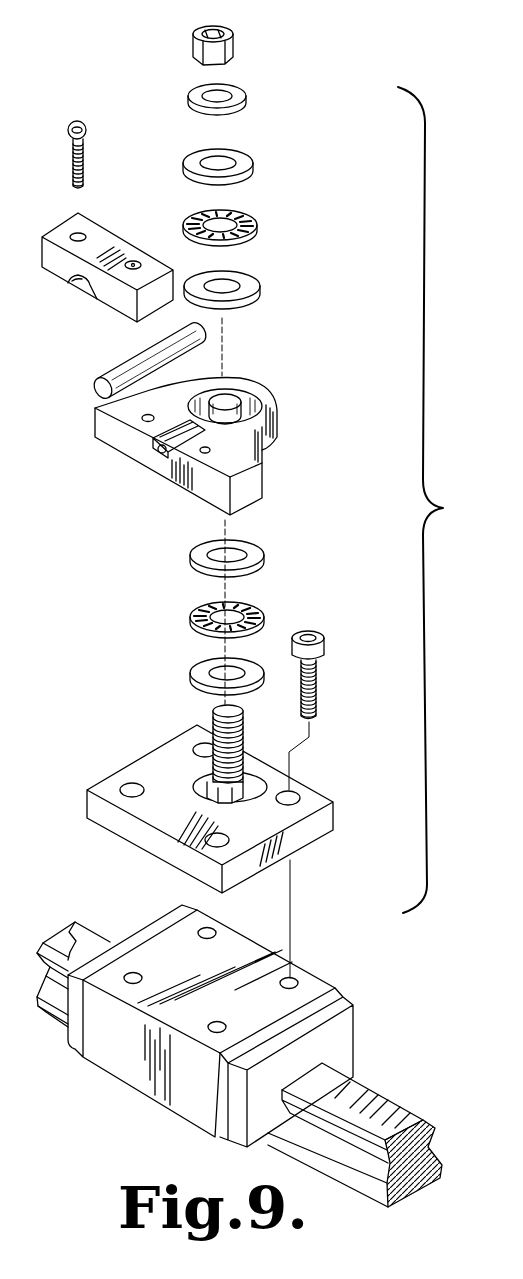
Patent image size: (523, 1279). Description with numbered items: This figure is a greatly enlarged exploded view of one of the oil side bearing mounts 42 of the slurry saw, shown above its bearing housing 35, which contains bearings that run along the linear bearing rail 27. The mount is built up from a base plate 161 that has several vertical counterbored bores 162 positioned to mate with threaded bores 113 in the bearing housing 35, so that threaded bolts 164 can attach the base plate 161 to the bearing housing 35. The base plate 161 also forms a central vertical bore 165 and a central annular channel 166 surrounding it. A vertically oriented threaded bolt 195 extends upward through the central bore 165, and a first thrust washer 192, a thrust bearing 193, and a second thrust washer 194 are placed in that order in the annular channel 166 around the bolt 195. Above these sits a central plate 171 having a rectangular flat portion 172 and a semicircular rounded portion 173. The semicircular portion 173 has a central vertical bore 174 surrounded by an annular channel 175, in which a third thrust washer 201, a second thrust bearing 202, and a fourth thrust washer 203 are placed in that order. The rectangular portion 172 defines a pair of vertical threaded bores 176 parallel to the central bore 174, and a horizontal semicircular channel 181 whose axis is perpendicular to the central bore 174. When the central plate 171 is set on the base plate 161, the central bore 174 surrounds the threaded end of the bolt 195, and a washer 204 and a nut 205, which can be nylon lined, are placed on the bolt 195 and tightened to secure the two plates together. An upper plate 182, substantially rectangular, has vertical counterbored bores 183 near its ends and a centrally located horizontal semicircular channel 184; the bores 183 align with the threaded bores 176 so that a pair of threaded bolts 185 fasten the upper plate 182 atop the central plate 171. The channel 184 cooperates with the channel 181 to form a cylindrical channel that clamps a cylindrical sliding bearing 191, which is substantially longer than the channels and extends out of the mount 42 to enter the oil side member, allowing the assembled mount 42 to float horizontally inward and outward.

The nut 205 is at (238, 45).
The washer 204 is at (248, 90).
The fourth thrust washer 203 is at (252, 162).
The second thrust bearing 202 is at (258, 214).
The third thrust washer 201 is at (260, 278).
The threaded bolts 185 is at (87, 143).
The upper plate 182 is at (91, 250).
The vertical counterbored bores 183 is at (134, 262).
The horizontal semicircular channel 184 is at (78, 282).
The sliding bearing 191 is at (112, 362).
The central plate 171 is at (193, 430).
The rectangular flat portion 172 is at (105, 435).
The semicircular rounded portion 173 is at (279, 412).
The central vertical bore 174 is at (227, 399).
The annular channel 175 is at (250, 399).
The vertical threaded bores 176 is at (192, 480).
The horizontal semicircular channel 181 is at (163, 449).
The second thrust washer 194 is at (248, 548).
The thrust bearing 193 is at (259, 612).
The first thrust washer 192 is at (188, 675).
The threaded bolts 164 is at (320, 682).
The threaded bolt 195 is at (245, 735).
The central annular channel 166 is at (196, 784).
The central vertical bore 165 is at (212, 800).
The vertical counterbored bores 162 is at (298, 792).
The base plate 161 is at (237, 798).
The threaded bores 113 is at (297, 979).
The bearing housing 35 is at (210, 1026).
The linear bearing rail 27 is at (400, 1117).
The oil side bearing mount 42 is at (358, 520).